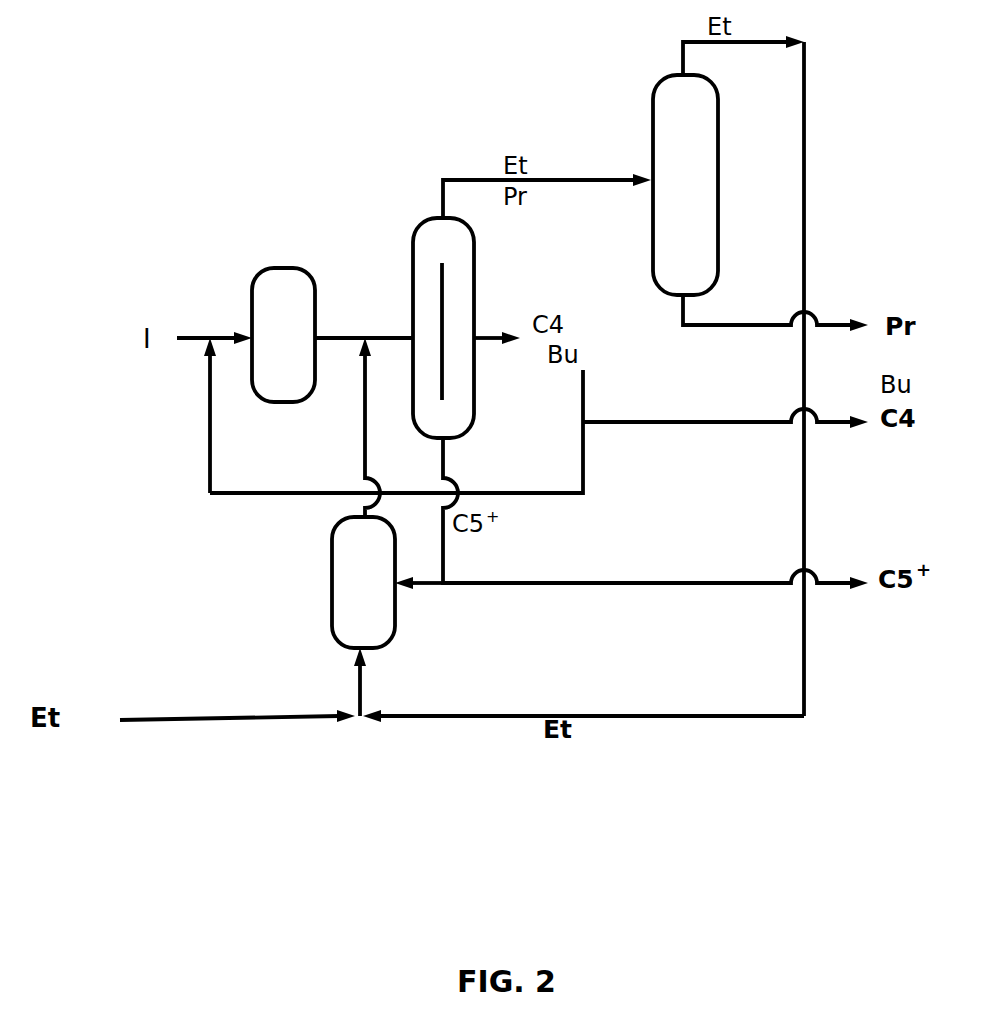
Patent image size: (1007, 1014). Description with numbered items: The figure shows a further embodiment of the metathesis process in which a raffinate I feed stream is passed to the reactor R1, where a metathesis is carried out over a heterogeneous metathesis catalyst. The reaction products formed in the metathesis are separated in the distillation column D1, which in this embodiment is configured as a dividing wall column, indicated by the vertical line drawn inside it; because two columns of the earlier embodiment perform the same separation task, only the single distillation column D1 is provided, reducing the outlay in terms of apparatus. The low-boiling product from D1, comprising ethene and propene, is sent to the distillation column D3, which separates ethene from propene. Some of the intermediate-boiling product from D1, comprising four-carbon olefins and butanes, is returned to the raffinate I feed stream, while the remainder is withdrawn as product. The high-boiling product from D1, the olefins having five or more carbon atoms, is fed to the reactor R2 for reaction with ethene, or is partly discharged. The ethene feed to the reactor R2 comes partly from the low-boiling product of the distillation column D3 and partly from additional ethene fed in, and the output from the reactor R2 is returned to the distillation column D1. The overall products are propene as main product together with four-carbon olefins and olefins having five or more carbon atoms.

The reactor R1 is at (283, 335).
The distillation column D1 is at (443, 328).
The distillation column D3 is at (685, 185).
The reactor R2 is at (363, 582).